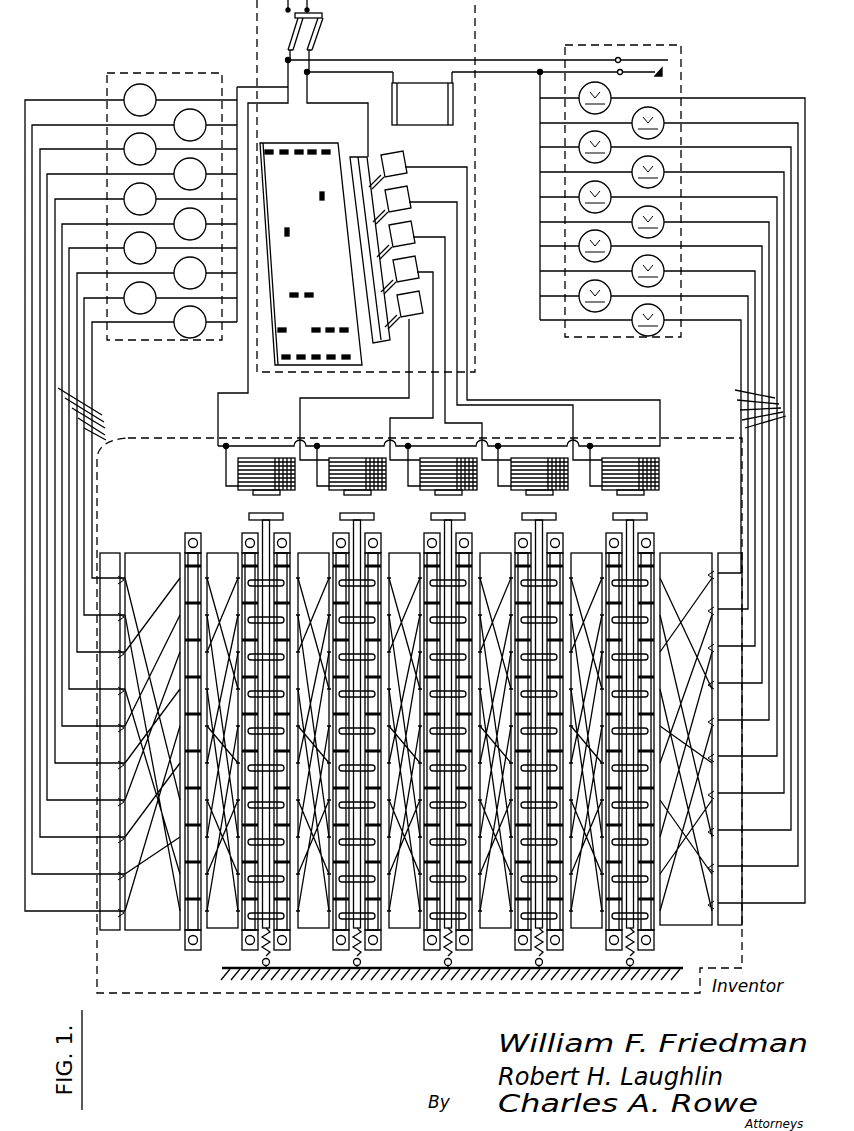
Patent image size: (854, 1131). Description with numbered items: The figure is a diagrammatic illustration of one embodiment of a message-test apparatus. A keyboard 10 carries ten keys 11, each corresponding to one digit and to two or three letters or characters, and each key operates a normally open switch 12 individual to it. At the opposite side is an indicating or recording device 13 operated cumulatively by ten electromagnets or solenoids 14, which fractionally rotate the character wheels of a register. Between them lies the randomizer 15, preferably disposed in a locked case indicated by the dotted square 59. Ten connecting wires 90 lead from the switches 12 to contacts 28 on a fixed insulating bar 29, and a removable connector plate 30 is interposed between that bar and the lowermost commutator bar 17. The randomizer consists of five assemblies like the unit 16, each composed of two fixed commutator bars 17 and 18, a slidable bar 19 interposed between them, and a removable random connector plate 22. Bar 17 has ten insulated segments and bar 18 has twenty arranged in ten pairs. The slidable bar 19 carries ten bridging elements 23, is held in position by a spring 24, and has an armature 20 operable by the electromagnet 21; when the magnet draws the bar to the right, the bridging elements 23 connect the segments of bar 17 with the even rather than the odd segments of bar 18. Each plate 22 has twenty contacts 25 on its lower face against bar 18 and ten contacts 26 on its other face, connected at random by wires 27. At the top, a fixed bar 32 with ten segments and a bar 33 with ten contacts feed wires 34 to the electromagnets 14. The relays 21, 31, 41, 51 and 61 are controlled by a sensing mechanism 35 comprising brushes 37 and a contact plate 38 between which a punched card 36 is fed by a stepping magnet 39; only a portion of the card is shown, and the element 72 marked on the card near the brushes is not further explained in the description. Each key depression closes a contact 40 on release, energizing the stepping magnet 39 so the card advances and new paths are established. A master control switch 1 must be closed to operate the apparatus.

The master control switch 1 is at (318, 30).
The keyboard 10 is at (680, 80).
The keys 11 is at (582, 88).
The switch 12 is at (665, 112).
The indicating or recording device 13 is at (200, 75).
The electromagnets or solenoids 14 is at (138, 96).
The randomizer 15 is at (221, 957).
The assembly unit 16 is at (226, 967).
The fixed commutator bar 17 is at (383, 546).
The fixed commutator bar 18 is at (286, 545).
The slidable bar 19 is at (262, 528).
The armature 20 is at (648, 514).
The electromagnet 21 is at (656, 472).
The random connector plate 22 is at (218, 558).
The bridging elements 23 is at (680, 937).
The spring 24 is at (272, 962).
The contacts 25 is at (441, 683).
The contacts 26 is at (472, 690).
The wires 27 is at (578, 790).
The contacts 28 is at (730, 556).
The fixed insulating bar 29 is at (744, 918).
The connector plate 30 is at (163, 556).
The electromagnetic relay 31 is at (530, 470).
The fixed bar 32 is at (190, 538).
The bar 33 is at (112, 933).
The wires 34 is at (90, 424).
The sensing mechanism 35 is at (470, 30).
The punched card 36 is at (336, 150).
The brushes 37 is at (396, 162).
The contact plate 38 is at (358, 160).
The stepping magnet 39 is at (426, 112).
The contact 40 is at (620, 60).
The electromagnetic relay 41 is at (440, 470).
The electromagnetic relay 51 is at (348, 470).
The locked case 59 is at (135, 993).
The electromagnetic relay 61 is at (258, 470).
The perforated card 72 is at (298, 150).
The connecting wires 90 is at (745, 409).